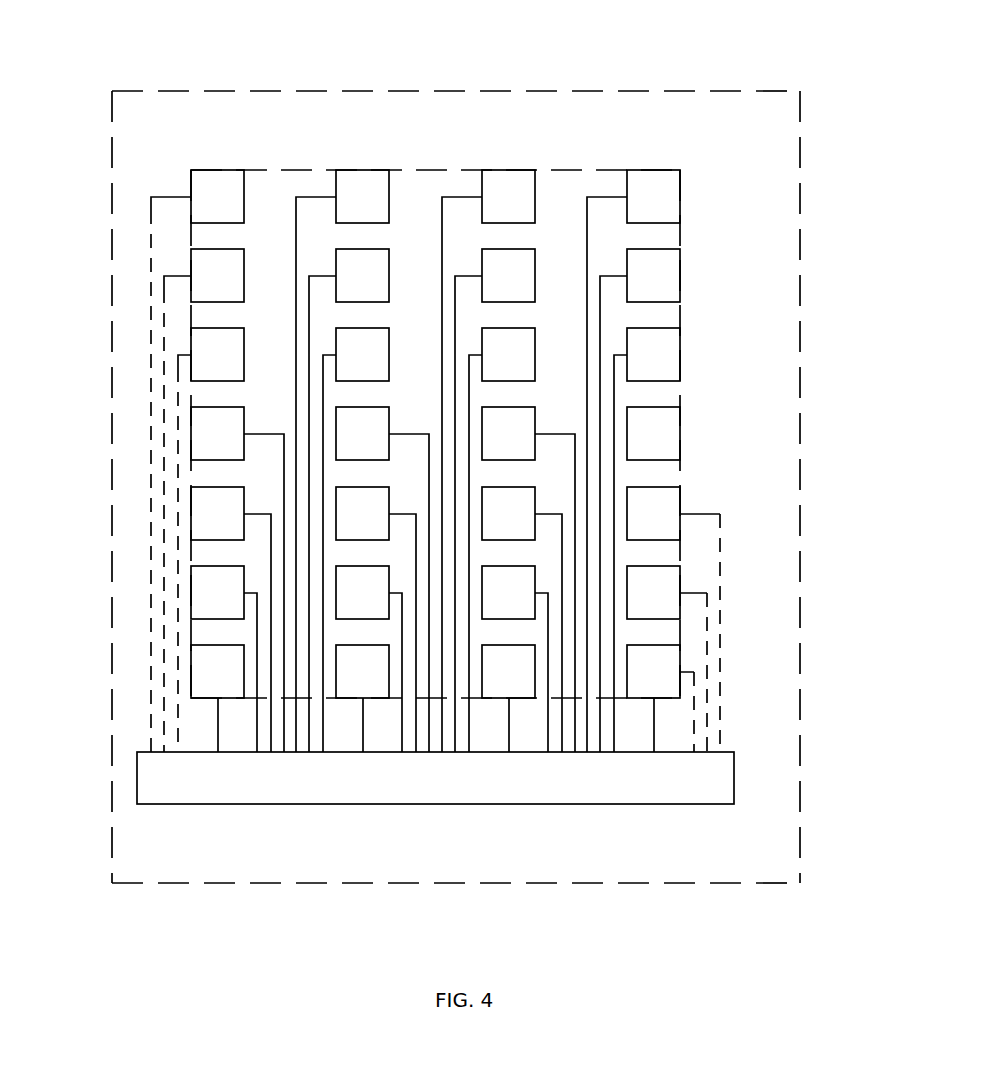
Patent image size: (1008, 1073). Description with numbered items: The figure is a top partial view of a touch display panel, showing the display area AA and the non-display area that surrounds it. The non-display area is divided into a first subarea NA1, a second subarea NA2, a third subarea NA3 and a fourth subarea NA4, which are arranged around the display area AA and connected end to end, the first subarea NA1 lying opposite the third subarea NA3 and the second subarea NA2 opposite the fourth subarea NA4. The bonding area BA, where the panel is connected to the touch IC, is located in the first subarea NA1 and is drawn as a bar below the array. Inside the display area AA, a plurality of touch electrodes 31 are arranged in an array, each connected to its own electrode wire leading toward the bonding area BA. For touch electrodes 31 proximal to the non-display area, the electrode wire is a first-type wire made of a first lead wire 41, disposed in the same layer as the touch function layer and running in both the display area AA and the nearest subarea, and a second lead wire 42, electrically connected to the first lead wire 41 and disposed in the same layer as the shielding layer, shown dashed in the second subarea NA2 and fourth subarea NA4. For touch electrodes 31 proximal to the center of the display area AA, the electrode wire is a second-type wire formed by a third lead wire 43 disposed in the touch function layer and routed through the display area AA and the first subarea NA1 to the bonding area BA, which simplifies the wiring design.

The touch electrode 31 is at (217, 197).
The first lead wire 41 is at (177, 197).
The second lead wire 42 is at (150, 355).
The third lead wire 43 is at (254, 434).
The display area AA is at (562, 197).
The bonding area BA is at (613, 777).
The first subarea NA1 is at (455, 857).
The second subarea NA2 is at (772, 303).
The third subarea NA3 is at (375, 117).
The fourth subarea NA4 is at (138, 698).